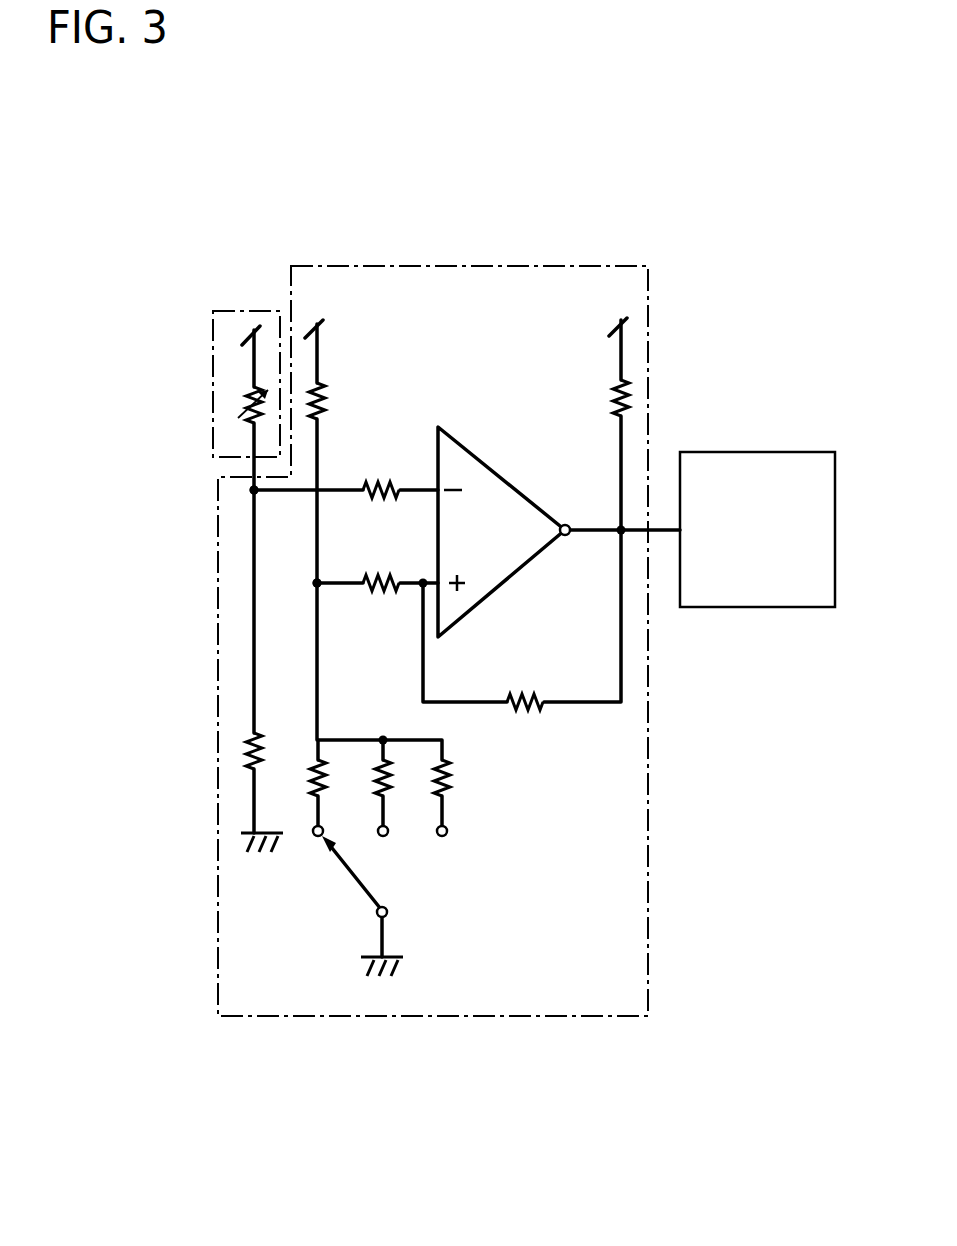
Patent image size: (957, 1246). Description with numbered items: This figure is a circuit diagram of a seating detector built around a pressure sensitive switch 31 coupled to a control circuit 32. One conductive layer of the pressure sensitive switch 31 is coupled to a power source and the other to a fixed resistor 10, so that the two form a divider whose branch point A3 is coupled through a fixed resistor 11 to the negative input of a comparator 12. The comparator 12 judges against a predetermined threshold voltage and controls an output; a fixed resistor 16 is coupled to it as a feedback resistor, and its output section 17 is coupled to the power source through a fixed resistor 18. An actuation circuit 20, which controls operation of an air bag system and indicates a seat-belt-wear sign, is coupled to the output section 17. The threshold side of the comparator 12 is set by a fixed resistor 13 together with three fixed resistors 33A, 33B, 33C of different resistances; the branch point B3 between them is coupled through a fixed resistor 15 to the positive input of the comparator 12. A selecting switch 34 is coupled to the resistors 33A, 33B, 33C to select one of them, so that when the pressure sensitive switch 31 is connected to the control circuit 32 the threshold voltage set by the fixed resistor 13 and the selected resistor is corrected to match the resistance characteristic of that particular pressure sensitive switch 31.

The fixed resistor 10 is at (250, 753).
The fixed resistor 11 is at (377, 480).
The comparator 12 is at (468, 448).
The fixed resistor 13 is at (318, 393).
The fixed resistor 15 is at (387, 592).
The fixed resistor 16 is at (540, 697).
The output section 17 is at (567, 536).
The fixed resistor 18 is at (625, 384).
The actuation circuit 20 is at (759, 607).
The pressure sensitive switch 31 is at (213, 352).
The control circuit 32 is at (452, 266).
The fixed resistor 33A is at (325, 770).
The fixed resistor 33B is at (390, 800).
The fixed resistor 33C is at (448, 778).
The selecting switch 34 is at (350, 880).
The branch point A3 is at (248, 495).
The branch point B3 is at (313, 587).